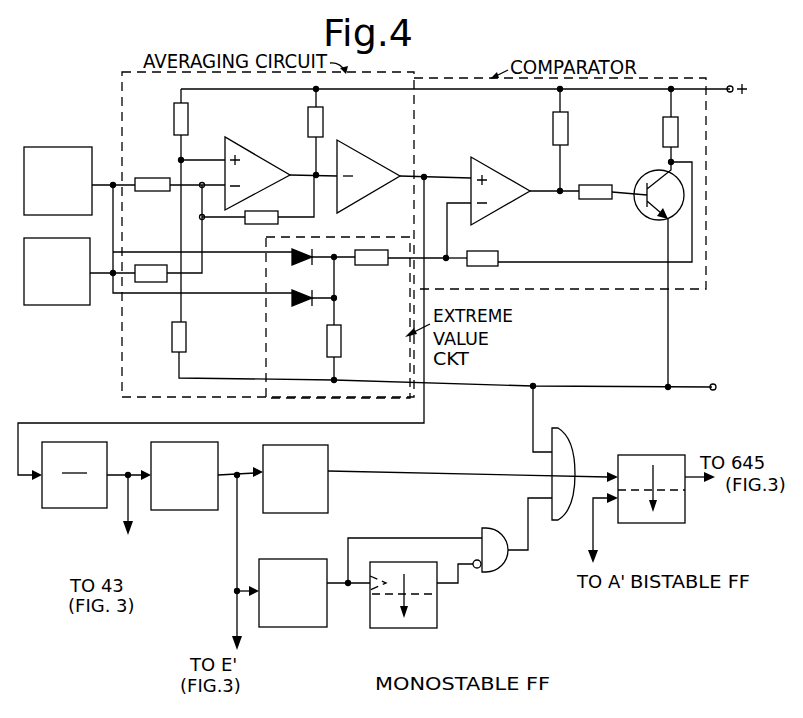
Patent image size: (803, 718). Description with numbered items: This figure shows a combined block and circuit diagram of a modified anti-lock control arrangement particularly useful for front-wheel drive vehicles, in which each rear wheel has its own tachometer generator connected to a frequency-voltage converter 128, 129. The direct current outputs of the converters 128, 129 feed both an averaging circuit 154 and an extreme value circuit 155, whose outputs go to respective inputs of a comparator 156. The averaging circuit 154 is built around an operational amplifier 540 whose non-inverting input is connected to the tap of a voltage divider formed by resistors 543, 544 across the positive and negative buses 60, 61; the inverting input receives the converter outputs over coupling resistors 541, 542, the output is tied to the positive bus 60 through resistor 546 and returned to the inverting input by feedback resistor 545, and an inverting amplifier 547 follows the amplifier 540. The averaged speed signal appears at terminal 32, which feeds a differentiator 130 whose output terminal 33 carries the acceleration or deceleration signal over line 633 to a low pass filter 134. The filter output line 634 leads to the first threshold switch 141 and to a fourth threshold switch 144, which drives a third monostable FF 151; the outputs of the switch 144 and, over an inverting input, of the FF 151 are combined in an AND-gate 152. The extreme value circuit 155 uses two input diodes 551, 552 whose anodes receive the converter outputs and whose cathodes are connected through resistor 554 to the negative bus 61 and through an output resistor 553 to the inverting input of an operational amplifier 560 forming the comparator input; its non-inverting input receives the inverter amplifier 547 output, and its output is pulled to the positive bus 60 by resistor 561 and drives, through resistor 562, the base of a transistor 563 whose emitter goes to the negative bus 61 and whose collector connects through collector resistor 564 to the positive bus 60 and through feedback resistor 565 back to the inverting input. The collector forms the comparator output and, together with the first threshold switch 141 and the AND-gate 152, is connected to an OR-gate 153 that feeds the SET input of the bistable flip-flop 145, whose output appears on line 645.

The frequency-voltage converter 128 is at (60, 150).
The frequency-voltage converter 129 is at (55, 305).
The averaging circuit 154 is at (122, 102).
The extreme value circuit 155 is at (410, 396).
The comparator 156 is at (582, 290).
The coupling resistor 541 is at (152, 178).
The coupling resistor 542 is at (150, 265).
The resistor 543 is at (186, 120).
The resistor 544 is at (185, 340).
The feedback resistor 545 is at (258, 211).
The resistor 546 is at (321, 124).
The operational amplifier 540 is at (257, 158).
The inverting amplifier 547 is at (373, 162).
The terminal 32 is at (426, 174).
The operational amplifier 560 is at (488, 158).
The resistor 561 is at (566, 130).
The resistor 562 is at (594, 186).
The transistor 563 is at (641, 183).
The collector resistor 564 is at (662, 130).
The feedback resistor 565 is at (486, 251).
The positive bus 60 is at (728, 93).
The negative bus 61 is at (710, 391).
The input diode 551 is at (288, 260).
The input diode 552 is at (298, 308).
The output resistor 553 is at (371, 265).
The resistor 554 is at (341, 347).
The differentiator 130 is at (72, 508).
The terminal 33 is at (134, 470).
The line 633 is at (126, 503).
The low pass filter 134 is at (185, 510).
The first threshold switch 141 is at (293, 513).
The fourth threshold switch 144 is at (293, 627).
The output line 634 is at (234, 620).
The third monostable multivibrator 151 is at (422, 620).
The AND-gate 152 is at (502, 562).
The OR-gate 153 is at (560, 522).
The first flip-flop 145 is at (653, 523).
The line 645 is at (693, 490).